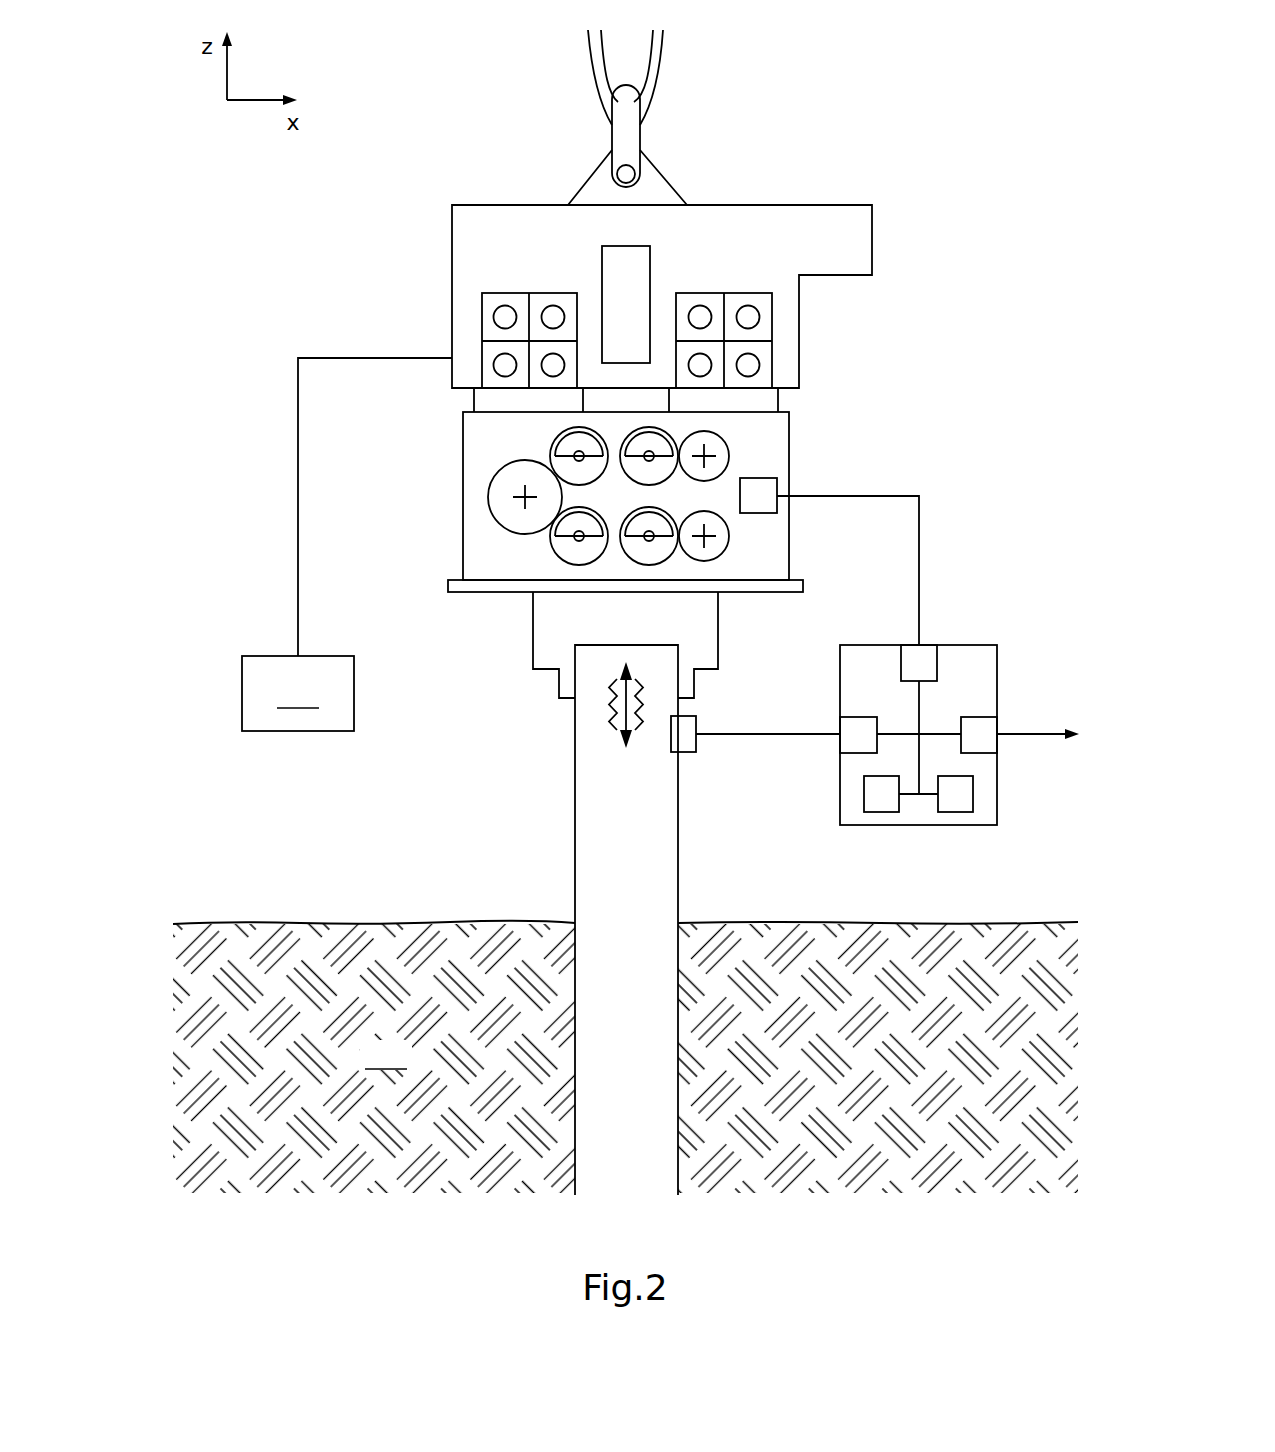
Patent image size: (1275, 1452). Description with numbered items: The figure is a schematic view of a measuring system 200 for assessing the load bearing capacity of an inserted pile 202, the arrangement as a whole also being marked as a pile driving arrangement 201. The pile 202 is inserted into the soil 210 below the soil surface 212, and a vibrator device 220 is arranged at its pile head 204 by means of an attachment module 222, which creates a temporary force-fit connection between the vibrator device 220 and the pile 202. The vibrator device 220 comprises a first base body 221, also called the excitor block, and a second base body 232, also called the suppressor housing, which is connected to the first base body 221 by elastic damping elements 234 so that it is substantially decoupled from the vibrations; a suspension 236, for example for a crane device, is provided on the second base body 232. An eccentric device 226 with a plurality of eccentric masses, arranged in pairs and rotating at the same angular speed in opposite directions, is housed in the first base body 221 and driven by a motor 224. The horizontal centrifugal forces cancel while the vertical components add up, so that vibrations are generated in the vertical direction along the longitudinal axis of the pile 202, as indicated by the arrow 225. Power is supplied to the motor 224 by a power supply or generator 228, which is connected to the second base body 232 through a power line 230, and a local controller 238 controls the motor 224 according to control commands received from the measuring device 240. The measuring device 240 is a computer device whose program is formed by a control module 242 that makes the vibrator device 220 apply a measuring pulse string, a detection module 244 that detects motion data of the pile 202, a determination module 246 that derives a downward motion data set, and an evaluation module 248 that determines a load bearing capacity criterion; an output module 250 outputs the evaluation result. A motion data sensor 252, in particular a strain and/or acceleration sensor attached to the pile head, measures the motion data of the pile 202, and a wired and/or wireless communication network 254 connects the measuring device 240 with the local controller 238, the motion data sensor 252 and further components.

The measuring system 200 is at (1008, 100).
The pile driving arrangement 201 is at (1000, 411).
The inserted pile 202 is at (575, 838).
The pile head 204 is at (624, 645).
The soil 210 is at (625, 1058).
The soil surface 212 is at (370, 923).
The vibrator device 220 is at (360, 256).
The first base body 221 is at (631, 494).
The attachment module 222 is at (718, 630).
The motor 224 is at (488, 485).
The arrow 225 is at (590, 705).
The eccentric device 226 is at (758, 444).
The power supply 228 is at (298, 693).
The power line 230 is at (298, 510).
The second base body 232 is at (748, 205).
The elastic damping elements 234 is at (505, 293).
The suspension 236 is at (612, 140).
The local controller 238 is at (780, 505).
The measuring device 240 is at (919, 737).
The control module 242 is at (930, 645).
The detection module 244 is at (840, 722).
The determination module 246 is at (880, 812).
The evaluation module 248 is at (960, 812).
The output module 250 is at (998, 722).
The motion data sensor 252 is at (688, 752).
The communication network 254 is at (837, 496).